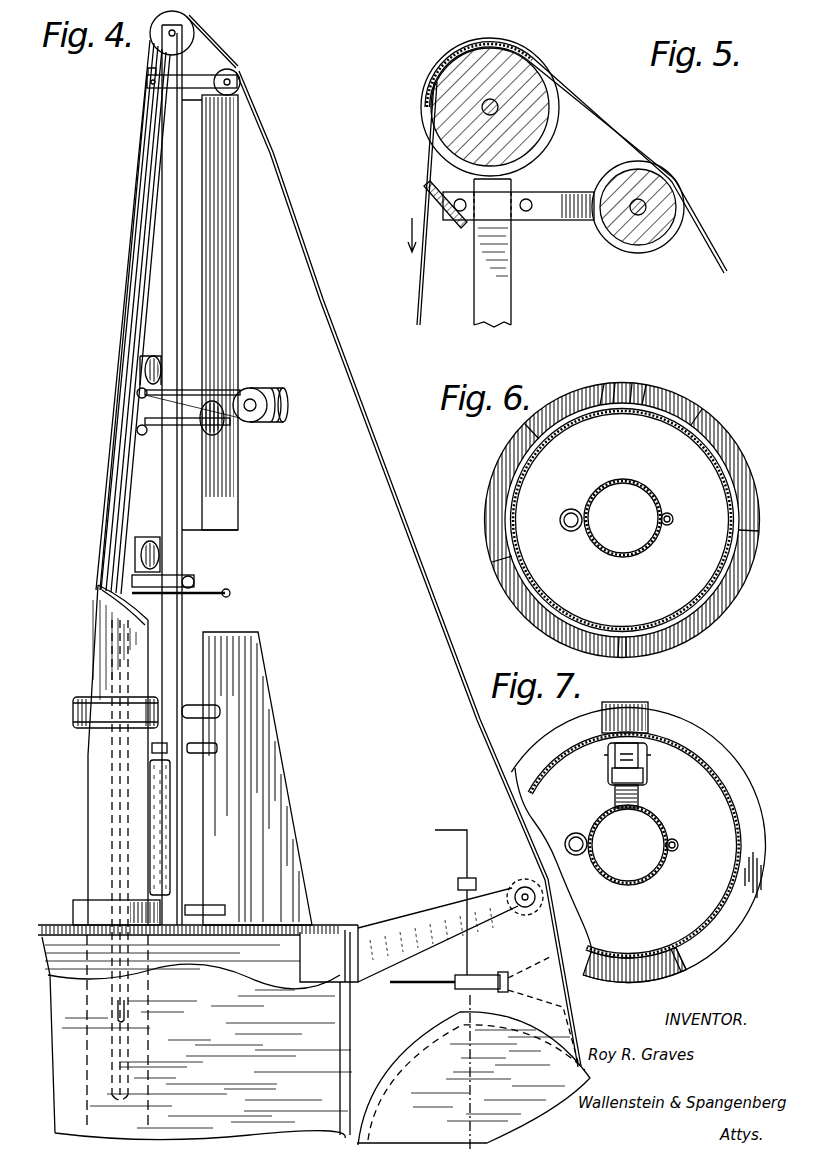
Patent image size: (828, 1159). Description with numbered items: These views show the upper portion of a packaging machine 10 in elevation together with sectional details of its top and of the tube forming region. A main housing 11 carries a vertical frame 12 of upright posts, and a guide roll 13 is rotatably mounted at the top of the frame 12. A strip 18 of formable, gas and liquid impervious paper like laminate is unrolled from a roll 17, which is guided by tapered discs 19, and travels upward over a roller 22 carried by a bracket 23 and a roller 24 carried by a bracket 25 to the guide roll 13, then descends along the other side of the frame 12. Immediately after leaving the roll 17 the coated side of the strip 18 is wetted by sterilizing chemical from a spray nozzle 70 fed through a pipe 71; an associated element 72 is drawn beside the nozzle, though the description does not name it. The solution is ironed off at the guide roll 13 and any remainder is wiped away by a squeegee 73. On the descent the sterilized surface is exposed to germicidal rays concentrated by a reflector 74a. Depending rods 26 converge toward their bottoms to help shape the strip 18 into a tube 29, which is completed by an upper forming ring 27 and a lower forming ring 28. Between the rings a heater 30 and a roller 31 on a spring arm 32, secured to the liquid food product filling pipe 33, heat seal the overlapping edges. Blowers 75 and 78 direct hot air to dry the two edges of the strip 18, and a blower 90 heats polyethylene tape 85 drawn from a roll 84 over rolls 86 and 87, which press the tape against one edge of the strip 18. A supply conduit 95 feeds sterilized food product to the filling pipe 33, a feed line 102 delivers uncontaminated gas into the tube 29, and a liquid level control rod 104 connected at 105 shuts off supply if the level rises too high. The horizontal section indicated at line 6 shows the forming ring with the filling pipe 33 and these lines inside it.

In FIG. 4, the packaging machine 10 is at (335, 862).
In FIG. 4, the main housing 11 is at (318, 955).
In FIG. 4, the vertical frame 12 is at (170, 133).
In FIG. 5, the vertical frame 12 is at (495, 301).
In FIG. 4, the guide roll 13 is at (178, 16).
In FIG. 5, the guide roll 13 is at (440, 80).
In FIG. 4, the roll 17 is at (412, 1060).
In FIG. 4, the strip 18 is at (125, 298).
In FIG. 5, the strip 18 is at (614, 130).
In FIG. 6, the strip 18 is at (553, 613).
In FIG. 7, the strip 18 is at (722, 906).
In FIG. 4, the discs 19 is at (418, 1026).
In FIG. 4, the roller 22 is at (520, 880).
In FIG. 4, the bracket 23 is at (392, 928).
In FIG. 4, the roller 24 is at (240, 70).
In FIG. 5, the roller 24 is at (640, 243).
In FIG. 4, the bracket 25 is at (193, 80).
In FIG. 5, the bracket 25 is at (565, 215).
In FIG. 4, the depending rods 26 is at (140, 163).
In FIG. 4, the upper forming ring 27 is at (78, 710).
In FIG. 6, the upper forming ring 27 is at (731, 440).
In FIG. 4, the lower forming ring 28 is at (80, 905).
In FIG. 7, the lower forming ring 28 is at (741, 778).
In FIG. 4, the tube 29 is at (88, 768).
In FIG. 7, the tube 29 is at (652, 957).
In FIG. 4, the heater 30 is at (170, 870).
In FIG. 7, the heater 30 is at (637, 703).
In FIG. 7, the roller 31 is at (641, 750).
In FIG. 7, the spring arm 32 is at (641, 795).
In FIG. 4, the liquid food product filling pipe 33 is at (110, 835).
In FIG. 6, the liquid food product filling pipe 33 is at (641, 552).
In FIG. 7, the liquid food product filling pipe 33 is at (628, 887).
In FIG. 4, the section line 6— 6 is at (485, 999).
In FIG. 4, the spray nozzle 70 is at (486, 982).
In FIG. 4, the pipe 71 is at (428, 981).
In FIG. 4, the control rod 72 is at (465, 856).
In FIG. 4, the squeegee 73 is at (150, 72).
In FIG. 5, the squeegee 73 is at (425, 197).
In FIG. 4, the reflector 74a is at (235, 261).
In FIG. 4, the blower 75 is at (147, 360).
In FIG. 4, the blower 78 is at (148, 557).
In FIG. 4, the roll of polyethylene tape 84 is at (265, 420).
In FIG. 4, the polyethylene tape 85 is at (195, 390).
In FIG. 4, the roll 86 is at (137, 393).
In FIG. 4, the roll 87 is at (137, 430).
In FIG. 4, the blower 90 is at (218, 436).
In FIG. 4, the supply conduit 95 is at (178, 578).
In FIG. 6, the feed line 102 is at (573, 509).
In FIG. 7, the feed line 102 is at (577, 832).
In FIG. 4, the liquid level control rod 104 is at (130, 1000).
In FIG. 6, the liquid level control rod 104 is at (672, 515).
In FIG. 7, the liquid level control rod 104 is at (677, 843).
In FIG. 4, the connection 105 is at (205, 588).